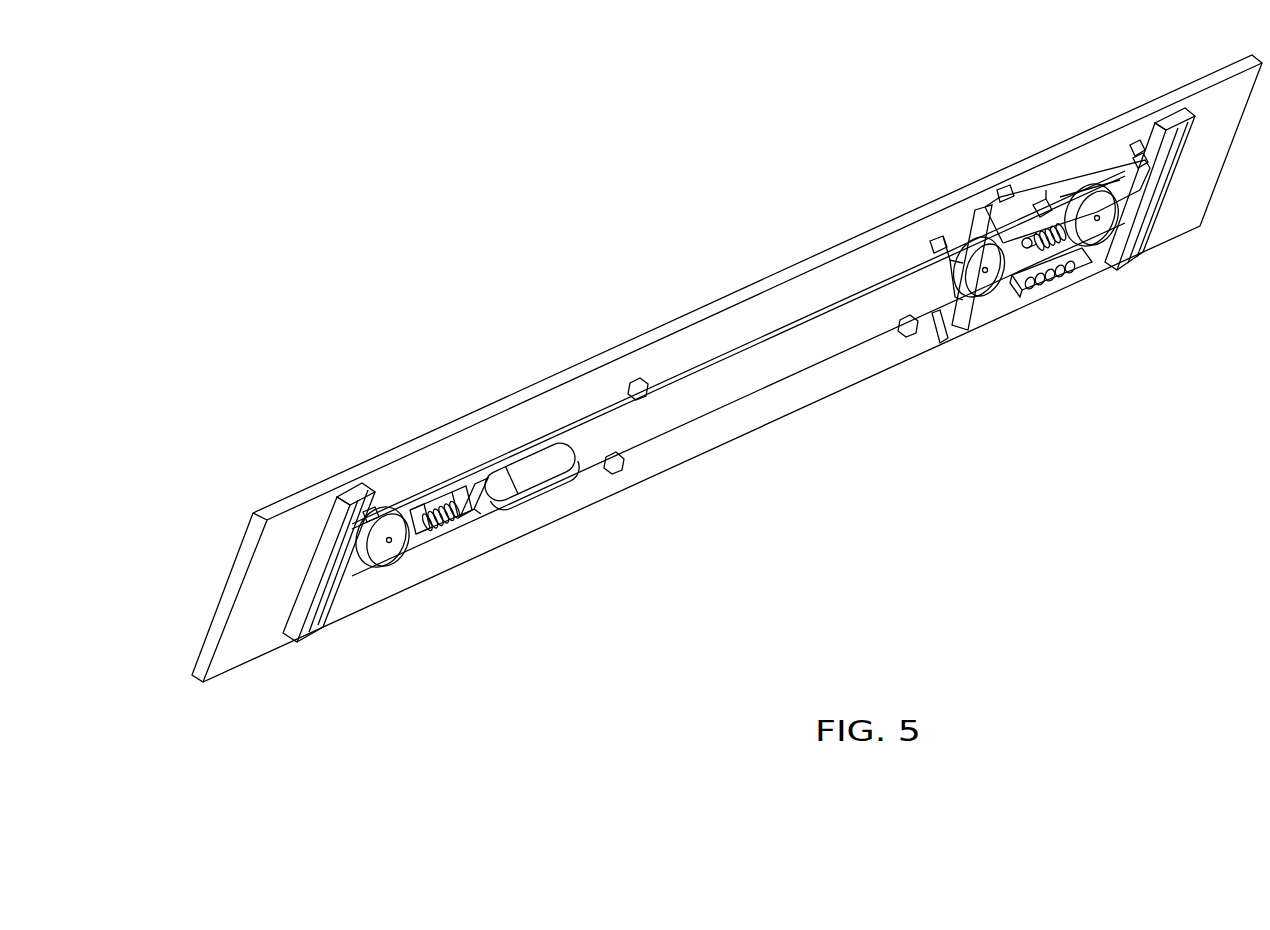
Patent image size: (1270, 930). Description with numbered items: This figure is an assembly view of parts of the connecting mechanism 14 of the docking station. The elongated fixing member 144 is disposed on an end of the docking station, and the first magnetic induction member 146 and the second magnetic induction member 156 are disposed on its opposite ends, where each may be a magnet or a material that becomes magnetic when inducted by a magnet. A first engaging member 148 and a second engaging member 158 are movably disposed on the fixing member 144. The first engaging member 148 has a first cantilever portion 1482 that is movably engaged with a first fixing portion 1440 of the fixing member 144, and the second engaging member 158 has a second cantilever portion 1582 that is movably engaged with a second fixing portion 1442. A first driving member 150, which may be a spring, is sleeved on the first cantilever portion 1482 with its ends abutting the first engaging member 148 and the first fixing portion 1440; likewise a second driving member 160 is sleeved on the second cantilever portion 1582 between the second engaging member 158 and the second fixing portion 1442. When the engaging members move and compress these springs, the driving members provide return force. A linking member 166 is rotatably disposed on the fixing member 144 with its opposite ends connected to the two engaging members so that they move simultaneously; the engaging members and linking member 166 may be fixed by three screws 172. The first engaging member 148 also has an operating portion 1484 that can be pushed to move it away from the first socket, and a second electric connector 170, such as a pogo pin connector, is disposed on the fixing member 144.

The connecting mechanism 14 is at (424, 184).
The fixing member 144 is at (752, 284).
The first magnetic induction member 146 is at (357, 520).
The first engaging member 148 is at (747, 380).
The first driving member 150 is at (433, 507).
The second magnetic induction member 156 is at (1147, 225).
The second engaging member 158 is at (1113, 177).
The second driving member 160 is at (1052, 228).
The linking member 166 is at (965, 312).
The second electric connector 170 is at (1067, 285).
The screws 172 is at (388, 548).
The first fixing portion 1440 is at (450, 497).
The second fixing portion 1442 is at (1040, 202).
The first cantilever portion 1482 is at (463, 519).
The operating portion 1484 is at (532, 488).
The second cantilever portion 1582 is at (1021, 243).